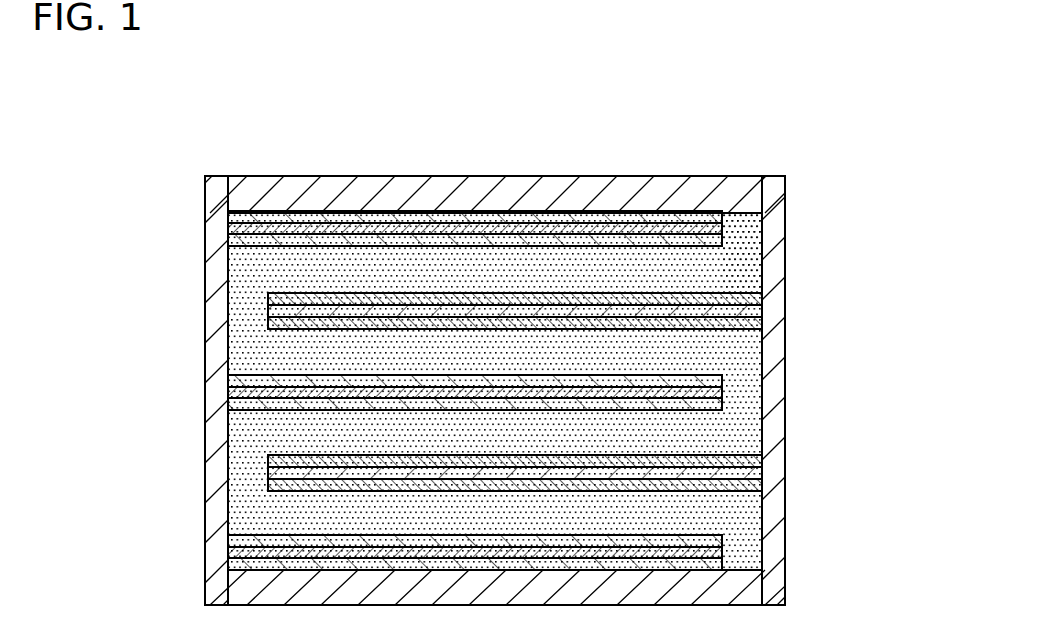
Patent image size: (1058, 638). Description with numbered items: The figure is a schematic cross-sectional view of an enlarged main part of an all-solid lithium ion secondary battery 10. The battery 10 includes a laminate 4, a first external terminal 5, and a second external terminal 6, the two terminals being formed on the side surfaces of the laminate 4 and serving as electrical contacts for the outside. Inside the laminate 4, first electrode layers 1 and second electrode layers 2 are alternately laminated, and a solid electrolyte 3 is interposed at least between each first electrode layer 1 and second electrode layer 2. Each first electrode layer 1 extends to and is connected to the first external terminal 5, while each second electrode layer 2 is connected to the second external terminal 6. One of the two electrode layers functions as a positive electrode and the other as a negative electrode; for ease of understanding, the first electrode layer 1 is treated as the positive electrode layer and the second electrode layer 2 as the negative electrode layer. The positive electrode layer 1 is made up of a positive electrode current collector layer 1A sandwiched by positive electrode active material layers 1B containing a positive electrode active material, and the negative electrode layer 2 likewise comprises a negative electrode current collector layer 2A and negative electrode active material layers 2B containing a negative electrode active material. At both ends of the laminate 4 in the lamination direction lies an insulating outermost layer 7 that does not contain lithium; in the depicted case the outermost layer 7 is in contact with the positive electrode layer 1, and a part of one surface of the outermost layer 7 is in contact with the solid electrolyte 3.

The all-solid lithium ion secondary battery 10 is at (830, 137).
The first electrode layer 1 is at (113, 175).
The positive electrode current collector layer 1A is at (232, 230).
The positive electrode active material layer 1B is at (232, 217).
The second electrode layer 2 is at (880, 257).
The negative electrode current collector layer 2A is at (760, 313).
The negative electrode active material layer 2B is at (760, 298).
The solid electrolyte 3 is at (730, 352).
The laminate 4 is at (762, 251).
The first external terminal 5 is at (217, 318).
The second external terminal 6 is at (773, 562).
The outermost layer 7 is at (300, 185).